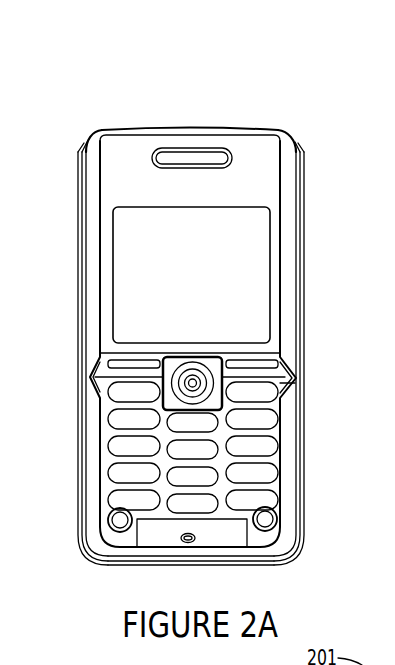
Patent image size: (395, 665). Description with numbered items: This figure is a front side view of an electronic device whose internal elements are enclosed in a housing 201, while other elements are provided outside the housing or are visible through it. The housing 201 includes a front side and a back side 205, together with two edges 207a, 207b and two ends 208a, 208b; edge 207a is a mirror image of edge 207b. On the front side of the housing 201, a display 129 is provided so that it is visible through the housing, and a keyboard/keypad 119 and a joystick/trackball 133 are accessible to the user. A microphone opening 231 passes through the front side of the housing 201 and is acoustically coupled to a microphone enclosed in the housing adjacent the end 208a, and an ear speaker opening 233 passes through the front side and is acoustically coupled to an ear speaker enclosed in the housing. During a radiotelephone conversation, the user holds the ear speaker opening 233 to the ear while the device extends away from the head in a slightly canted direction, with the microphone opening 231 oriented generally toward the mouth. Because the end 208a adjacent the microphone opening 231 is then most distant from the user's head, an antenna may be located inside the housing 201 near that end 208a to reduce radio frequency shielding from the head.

The housing 201 is at (87, 115).
The back side 205 is at (120, 178).
The edge 207a is at (78, 297).
The edge 207b is at (304, 318).
The end 208a is at (200, 565).
The end 208b is at (214, 129).
The ear speaker opening 233 is at (181, 148).
The display 129 is at (258, 262).
The joystick/trackball 133 is at (192, 383).
The keyboard/keypad 119 is at (277, 397).
The microphone opening 231 is at (250, 532).